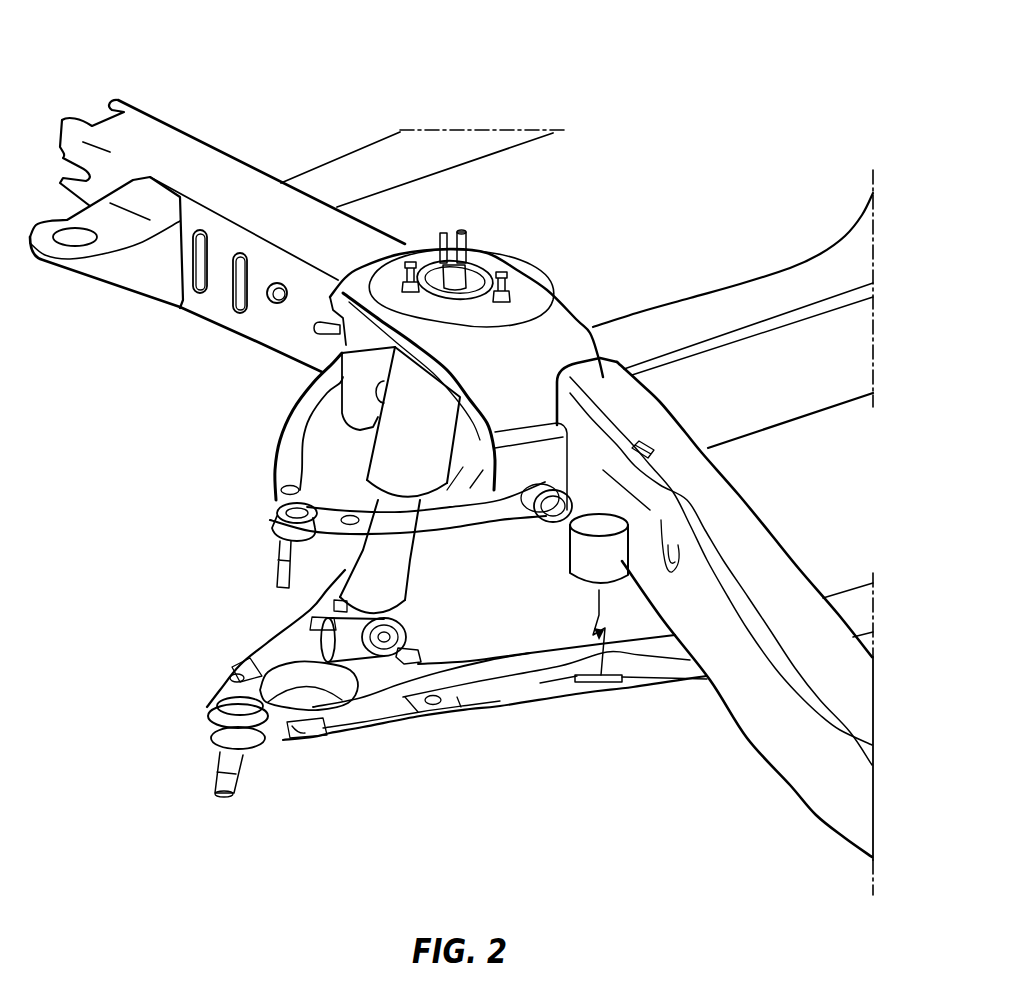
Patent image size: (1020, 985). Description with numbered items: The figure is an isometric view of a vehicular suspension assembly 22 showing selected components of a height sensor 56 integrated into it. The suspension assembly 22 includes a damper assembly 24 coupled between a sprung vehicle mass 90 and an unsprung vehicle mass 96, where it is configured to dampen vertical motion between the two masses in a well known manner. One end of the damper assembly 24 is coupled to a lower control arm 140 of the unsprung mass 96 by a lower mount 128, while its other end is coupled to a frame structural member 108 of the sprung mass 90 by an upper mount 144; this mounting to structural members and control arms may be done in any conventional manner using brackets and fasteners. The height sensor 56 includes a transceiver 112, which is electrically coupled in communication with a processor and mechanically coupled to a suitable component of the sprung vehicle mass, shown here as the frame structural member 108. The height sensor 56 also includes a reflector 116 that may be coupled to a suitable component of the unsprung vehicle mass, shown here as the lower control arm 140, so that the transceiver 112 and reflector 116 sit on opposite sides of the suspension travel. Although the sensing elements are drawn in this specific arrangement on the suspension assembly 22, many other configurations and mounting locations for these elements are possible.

The suspension assembly 22 is at (768, 78).
The damper assembly 24 is at (393, 573).
The height sensor 56 is at (557, 527).
The sprung vehicle mass 90 is at (100, 76).
The unsprung vehicle mass 96 is at (178, 722).
The frame structural member 108 is at (187, 143).
The transceiver 112 is at (630, 550).
The reflector 116 is at (624, 683).
The lower mount 128 is at (312, 640).
The lower control arm 140 is at (380, 710).
The upper mount 144 is at (467, 277).